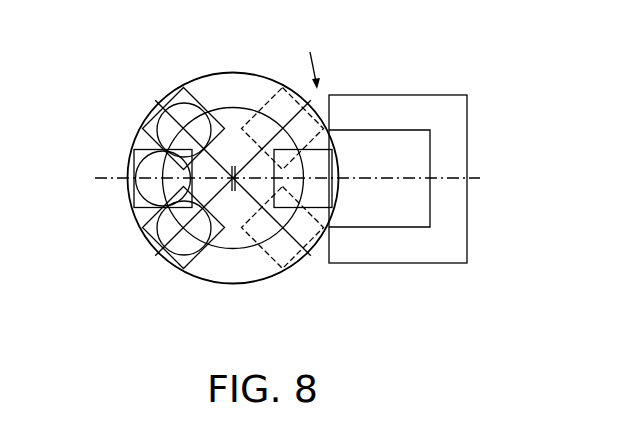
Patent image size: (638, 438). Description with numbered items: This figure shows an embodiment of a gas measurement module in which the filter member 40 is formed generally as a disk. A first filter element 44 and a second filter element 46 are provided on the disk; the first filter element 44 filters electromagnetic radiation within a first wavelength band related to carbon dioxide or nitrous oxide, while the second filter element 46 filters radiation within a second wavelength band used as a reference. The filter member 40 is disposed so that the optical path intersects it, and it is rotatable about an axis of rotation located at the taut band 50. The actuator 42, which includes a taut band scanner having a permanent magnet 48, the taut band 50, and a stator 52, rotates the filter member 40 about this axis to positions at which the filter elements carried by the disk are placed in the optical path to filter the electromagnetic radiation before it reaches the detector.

The filter member 40 is at (238, 74).
The actuator 42 is at (312, 59).
The first filter element 44 is at (179, 240).
The second filter element 46 is at (168, 101).
The permanent magnet 48 is at (323, 158).
The taut band 50 is at (237, 183).
The stator 52 is at (445, 101).